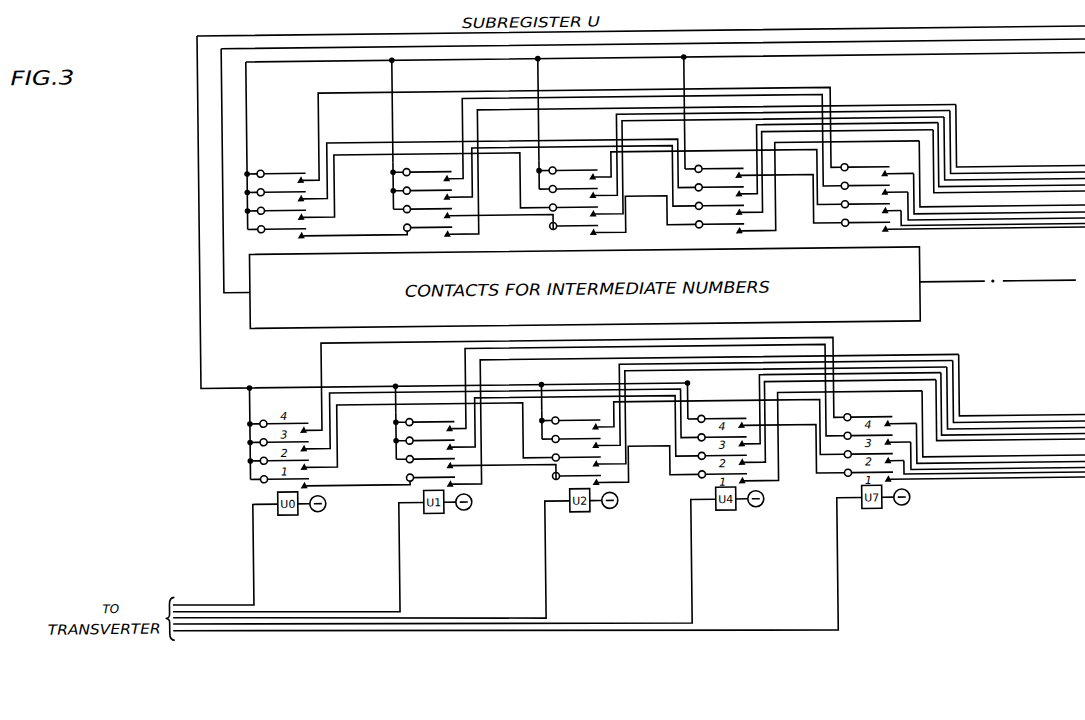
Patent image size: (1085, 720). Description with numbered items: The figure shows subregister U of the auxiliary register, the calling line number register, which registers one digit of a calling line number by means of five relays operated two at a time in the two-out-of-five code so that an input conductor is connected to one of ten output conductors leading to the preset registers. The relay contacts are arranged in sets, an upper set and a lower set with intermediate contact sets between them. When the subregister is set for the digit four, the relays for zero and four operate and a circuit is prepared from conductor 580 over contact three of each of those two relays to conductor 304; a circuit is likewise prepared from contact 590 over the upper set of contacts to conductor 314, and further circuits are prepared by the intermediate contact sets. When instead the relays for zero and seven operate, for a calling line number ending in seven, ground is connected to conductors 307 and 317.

The contact 590 is at (958, 63).
The conductor 580 is at (197, 327).
The conductor 314 is at (1006, 194).
The conductor 317 is at (979, 223).
The conductor 304 is at (1004, 441).
The conductor 307 is at (980, 472).